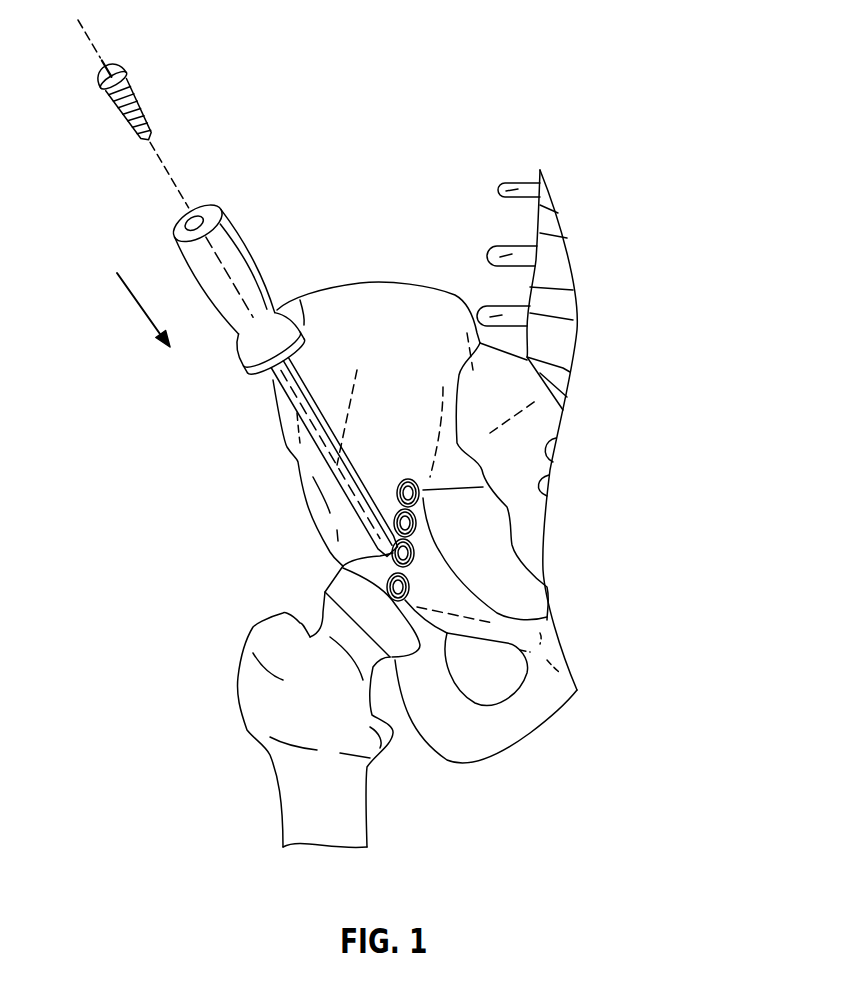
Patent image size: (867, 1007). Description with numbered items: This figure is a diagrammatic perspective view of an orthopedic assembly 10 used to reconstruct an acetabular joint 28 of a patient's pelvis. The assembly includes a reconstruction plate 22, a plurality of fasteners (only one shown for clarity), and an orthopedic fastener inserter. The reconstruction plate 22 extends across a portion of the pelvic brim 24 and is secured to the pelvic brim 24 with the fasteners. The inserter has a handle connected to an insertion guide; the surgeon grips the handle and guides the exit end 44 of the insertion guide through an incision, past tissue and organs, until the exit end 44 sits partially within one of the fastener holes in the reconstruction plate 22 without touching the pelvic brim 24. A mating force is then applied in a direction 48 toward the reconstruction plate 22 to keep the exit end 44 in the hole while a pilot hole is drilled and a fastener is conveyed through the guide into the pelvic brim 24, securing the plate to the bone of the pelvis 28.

The orthopedic assembly 10 is at (563, 77).
The reconstruction plate 22 is at (403, 477).
The pelvic brim 24 is at (310, 503).
The acetabular joint 28 is at (397, 283).
The exit end 44 is at (327, 590).
The direction 48 is at (140, 313).